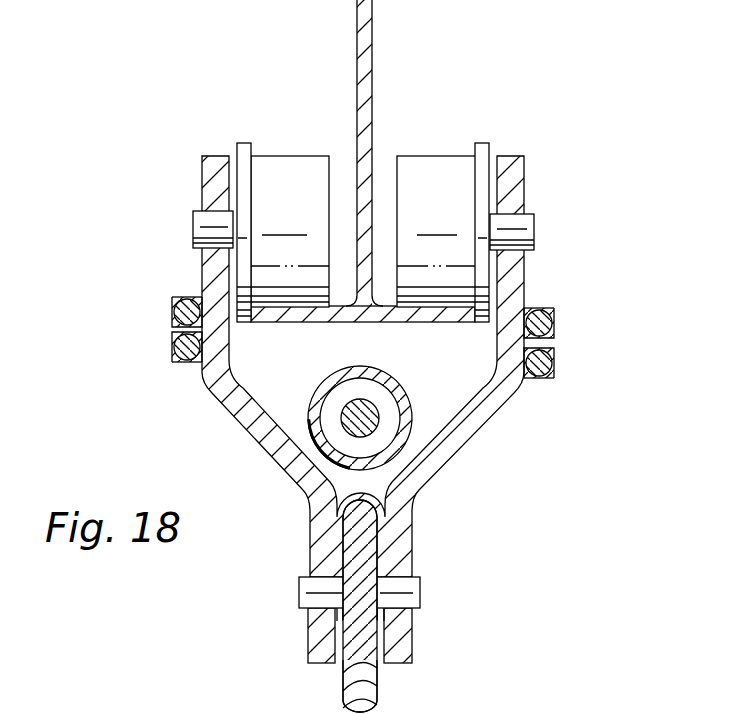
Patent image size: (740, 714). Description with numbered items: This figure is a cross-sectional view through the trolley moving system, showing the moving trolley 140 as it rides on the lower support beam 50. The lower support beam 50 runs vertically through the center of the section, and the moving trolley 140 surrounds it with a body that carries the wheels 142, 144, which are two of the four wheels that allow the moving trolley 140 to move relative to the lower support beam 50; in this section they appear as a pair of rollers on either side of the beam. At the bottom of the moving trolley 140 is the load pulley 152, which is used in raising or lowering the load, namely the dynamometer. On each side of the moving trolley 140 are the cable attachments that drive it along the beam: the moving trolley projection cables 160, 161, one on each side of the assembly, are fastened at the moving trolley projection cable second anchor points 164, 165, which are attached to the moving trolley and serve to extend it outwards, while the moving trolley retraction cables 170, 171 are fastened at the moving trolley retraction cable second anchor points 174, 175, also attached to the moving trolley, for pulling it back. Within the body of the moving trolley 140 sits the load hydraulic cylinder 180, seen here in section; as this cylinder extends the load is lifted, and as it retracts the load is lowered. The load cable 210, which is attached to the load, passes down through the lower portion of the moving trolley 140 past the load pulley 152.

The lower support beam 50 is at (373, 80).
The moving trolley 140 is at (452, 460).
The wheel 142 is at (432, 170).
The wheel 144 is at (300, 175).
The load pulley 152 is at (360, 562).
The moving trolley projection cable 160 is at (542, 308).
The moving trolley projection cable 161 is at (173, 300).
The moving trolley projection cable second anchor point 164 is at (557, 337).
The moving trolley projection cable second anchor point 165 is at (173, 323).
The moving trolley retraction cable 170 is at (557, 360).
The moving trolley retraction cable 171 is at (173, 342).
The moving trolley retraction cable second anchor point 174 is at (555, 378).
The moving trolley retraction cable second anchor point 175 is at (173, 358).
The load hydraulic cylinder 180 is at (337, 395).
The load cable 210 is at (352, 517).